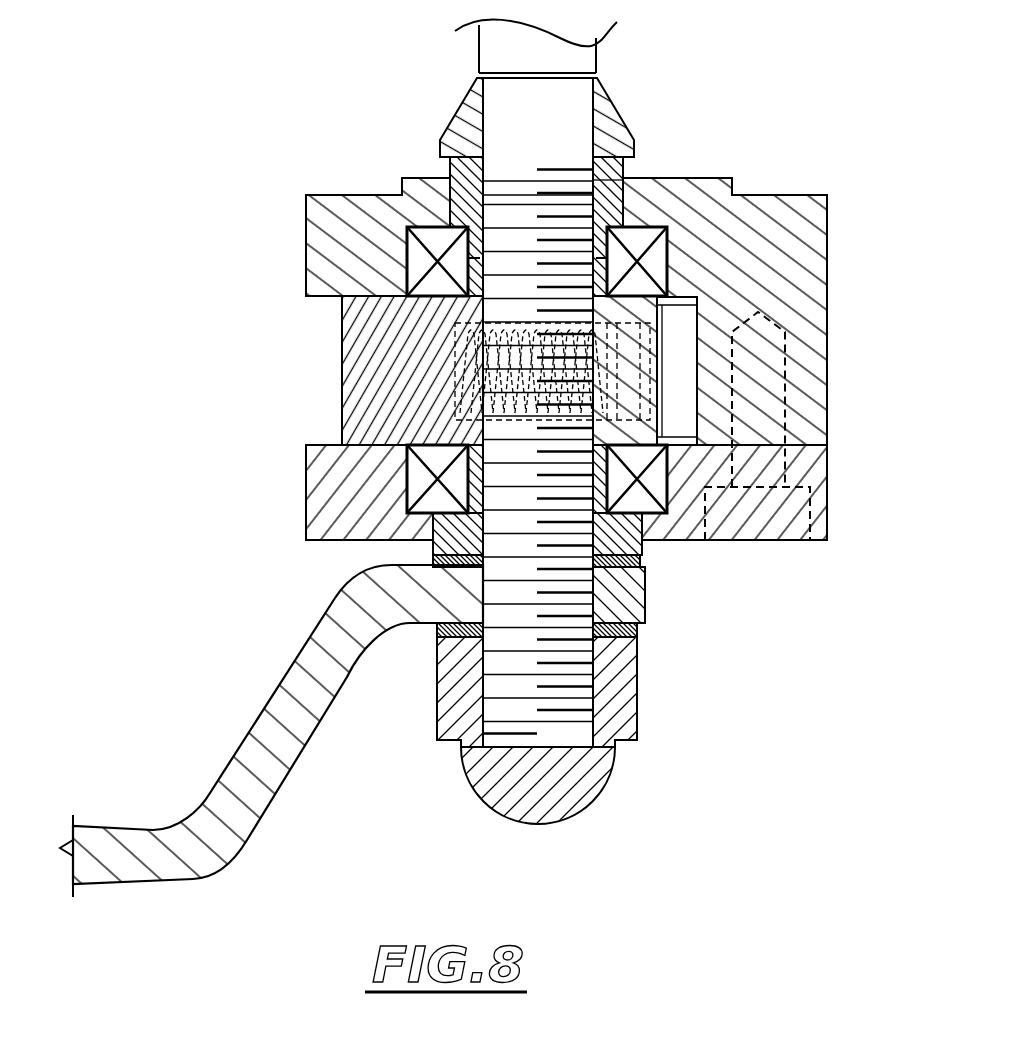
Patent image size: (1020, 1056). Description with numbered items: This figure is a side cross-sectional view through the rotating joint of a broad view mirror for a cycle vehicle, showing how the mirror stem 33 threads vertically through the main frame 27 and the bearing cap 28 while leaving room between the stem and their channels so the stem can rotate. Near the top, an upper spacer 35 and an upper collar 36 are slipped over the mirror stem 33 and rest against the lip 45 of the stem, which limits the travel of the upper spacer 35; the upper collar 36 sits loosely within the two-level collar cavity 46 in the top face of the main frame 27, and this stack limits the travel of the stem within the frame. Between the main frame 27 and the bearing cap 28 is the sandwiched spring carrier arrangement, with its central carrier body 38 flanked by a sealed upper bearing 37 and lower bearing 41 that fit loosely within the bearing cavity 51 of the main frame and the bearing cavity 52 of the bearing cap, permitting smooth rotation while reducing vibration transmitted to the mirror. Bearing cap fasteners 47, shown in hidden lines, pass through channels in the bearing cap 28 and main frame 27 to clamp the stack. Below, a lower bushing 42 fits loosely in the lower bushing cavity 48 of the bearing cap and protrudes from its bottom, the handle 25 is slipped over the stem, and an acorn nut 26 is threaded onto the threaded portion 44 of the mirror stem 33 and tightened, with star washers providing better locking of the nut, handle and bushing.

The handle 25 is at (215, 850).
The acorn nut 26 is at (585, 793).
The main frame 27 is at (822, 231).
The bearing cap 28 is at (822, 472).
The mirror stem 33 is at (596, 45).
The upper spacer 35 is at (627, 120).
The upper collar 36 is at (625, 163).
The upper bearing 37 is at (410, 240).
The spacer block 38 is at (347, 360).
The lower bearing 41 is at (413, 493).
The lower bushing 42 is at (450, 543).
The threaded portion 44 is at (493, 195).
The lip 45 is at (596, 78).
The collar cavity 46 is at (617, 203).
The bearing cap fasteners 47 is at (775, 513).
The lower bushing cavity 48 is at (620, 530).
The bearing cavity 51 is at (418, 262).
The bearing cavity 52 is at (418, 470).